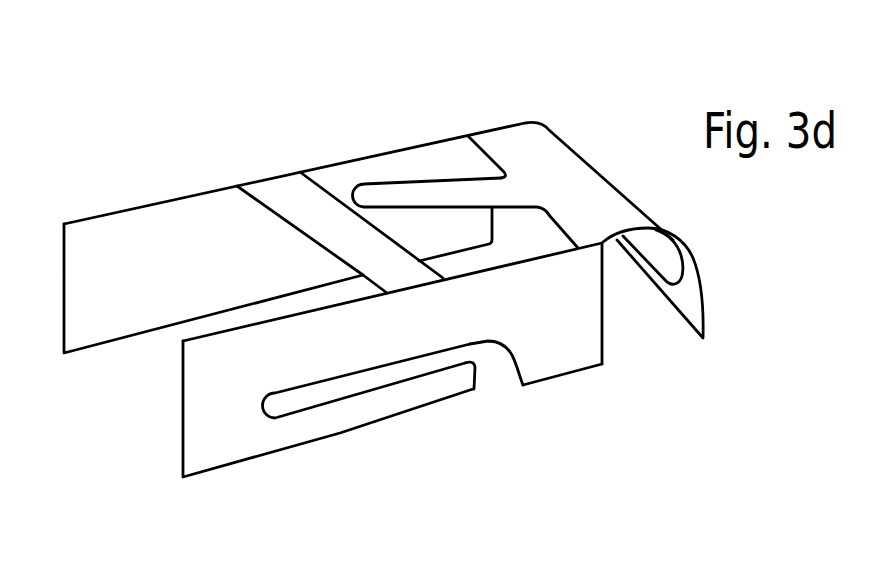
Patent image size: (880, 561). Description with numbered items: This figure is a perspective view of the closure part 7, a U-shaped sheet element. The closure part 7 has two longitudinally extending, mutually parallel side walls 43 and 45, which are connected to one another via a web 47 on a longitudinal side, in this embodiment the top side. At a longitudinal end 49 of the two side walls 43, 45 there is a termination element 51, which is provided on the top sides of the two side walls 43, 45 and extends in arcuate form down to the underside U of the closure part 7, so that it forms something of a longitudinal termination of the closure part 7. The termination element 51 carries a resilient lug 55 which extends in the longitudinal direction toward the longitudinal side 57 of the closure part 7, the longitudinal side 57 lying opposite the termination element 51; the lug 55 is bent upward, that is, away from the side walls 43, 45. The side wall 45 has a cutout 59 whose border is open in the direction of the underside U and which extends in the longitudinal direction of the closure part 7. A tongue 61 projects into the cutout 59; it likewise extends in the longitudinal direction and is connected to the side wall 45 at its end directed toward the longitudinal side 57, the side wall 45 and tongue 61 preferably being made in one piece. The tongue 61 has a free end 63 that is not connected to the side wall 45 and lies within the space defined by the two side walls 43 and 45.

The closure part 7 is at (158, 94).
The side wall 43 is at (82, 315).
The side wall 45 is at (178, 462).
The web 47 is at (385, 272).
The longitudinal end 49 is at (472, 109).
The termination element 51 is at (562, 163).
The resilient lug 55 is at (392, 197).
The longitudinal side 57 is at (116, 394).
The cutout 59 is at (515, 383).
The tongue 61 is at (448, 388).
The free end 63 is at (483, 382).
The underside U is at (565, 375).